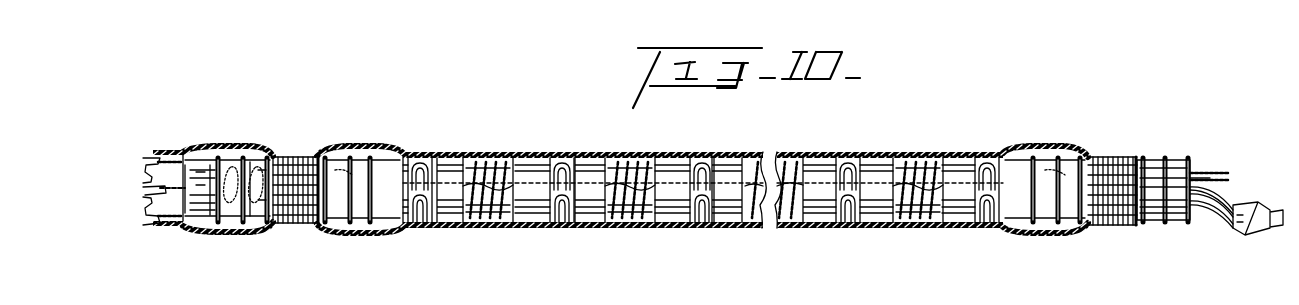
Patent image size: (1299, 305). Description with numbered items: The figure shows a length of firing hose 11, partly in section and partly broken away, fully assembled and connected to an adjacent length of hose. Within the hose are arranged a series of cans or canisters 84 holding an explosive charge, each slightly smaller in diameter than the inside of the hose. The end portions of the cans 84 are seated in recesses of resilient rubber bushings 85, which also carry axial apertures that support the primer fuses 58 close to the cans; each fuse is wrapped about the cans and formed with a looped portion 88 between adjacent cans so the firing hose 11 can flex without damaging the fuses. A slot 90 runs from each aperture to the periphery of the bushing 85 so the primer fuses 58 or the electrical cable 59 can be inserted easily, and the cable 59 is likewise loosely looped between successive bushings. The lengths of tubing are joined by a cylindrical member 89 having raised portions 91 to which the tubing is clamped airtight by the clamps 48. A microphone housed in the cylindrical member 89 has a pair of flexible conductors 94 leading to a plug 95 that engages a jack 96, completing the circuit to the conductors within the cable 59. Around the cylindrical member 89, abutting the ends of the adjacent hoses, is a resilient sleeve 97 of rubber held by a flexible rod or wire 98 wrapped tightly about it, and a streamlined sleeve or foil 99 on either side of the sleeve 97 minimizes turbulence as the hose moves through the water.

The firing hose 11 is at (462, 148).
The clamps 48 is at (233, 150).
The primer fuses 58 is at (153, 162).
The electrical cable 59 is at (155, 190).
The cans or canisters 84 is at (486, 155).
The resilient bushings 85 is at (396, 160).
The looped portion 88 is at (424, 160).
The cylindrical member 89 is at (195, 232).
The slot 90 is at (601, 172).
The raised portions 91 is at (200, 160).
The flexible conductors 94 is at (1198, 212).
The plug 95 is at (255, 236).
The jack 96 is at (232, 240).
The resilient sleeve 97 is at (308, 226).
The flexible rod or wire 98 is at (294, 157).
The streamlined sleeve or foil 99 is at (226, 150).